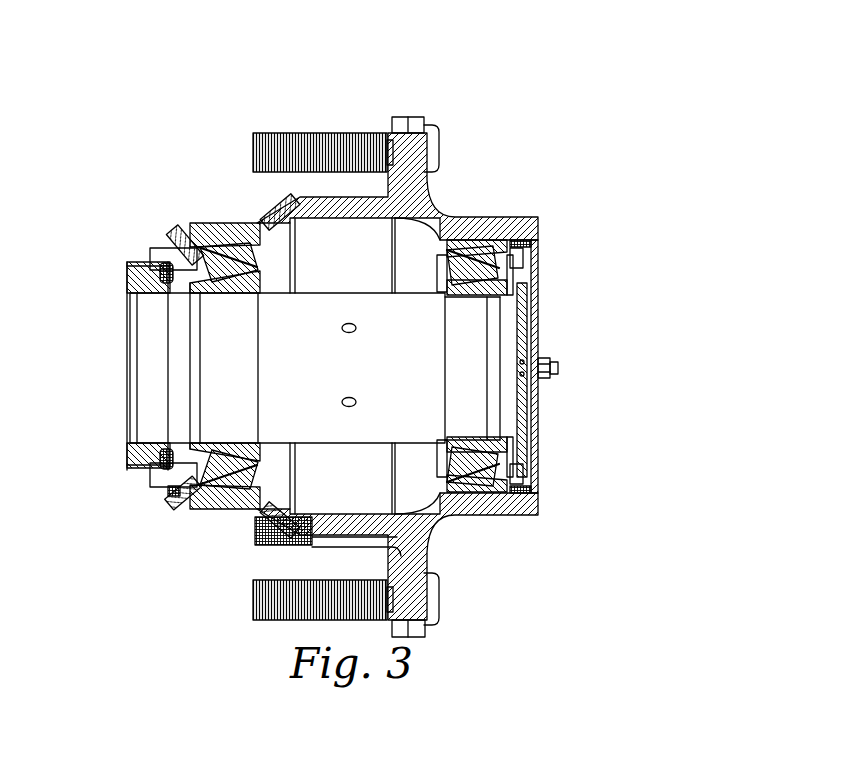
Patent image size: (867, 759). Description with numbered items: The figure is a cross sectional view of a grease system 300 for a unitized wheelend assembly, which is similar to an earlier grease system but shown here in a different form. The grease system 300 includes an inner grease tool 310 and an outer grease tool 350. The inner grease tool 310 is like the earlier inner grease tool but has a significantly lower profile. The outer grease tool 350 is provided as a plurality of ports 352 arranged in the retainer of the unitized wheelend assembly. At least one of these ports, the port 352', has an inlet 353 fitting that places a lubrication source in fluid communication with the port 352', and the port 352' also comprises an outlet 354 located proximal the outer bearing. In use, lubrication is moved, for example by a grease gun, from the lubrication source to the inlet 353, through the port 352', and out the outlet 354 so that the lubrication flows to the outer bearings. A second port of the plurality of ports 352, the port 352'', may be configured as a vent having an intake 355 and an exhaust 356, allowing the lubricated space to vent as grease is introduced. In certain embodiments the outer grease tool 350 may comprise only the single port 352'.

The grease system 300 is at (628, 147).
The inner grease tool 310 is at (663, 273).
The outer grease tool 350 is at (183, 508).
The ports 352 is at (170, 209).
The port 352' is at (127, 250).
The port 352'' is at (200, 531).
The inlet 353 is at (180, 242).
The outlet 354 is at (200, 240).
The intake 355 is at (188, 445).
The exhaust 356 is at (168, 502).